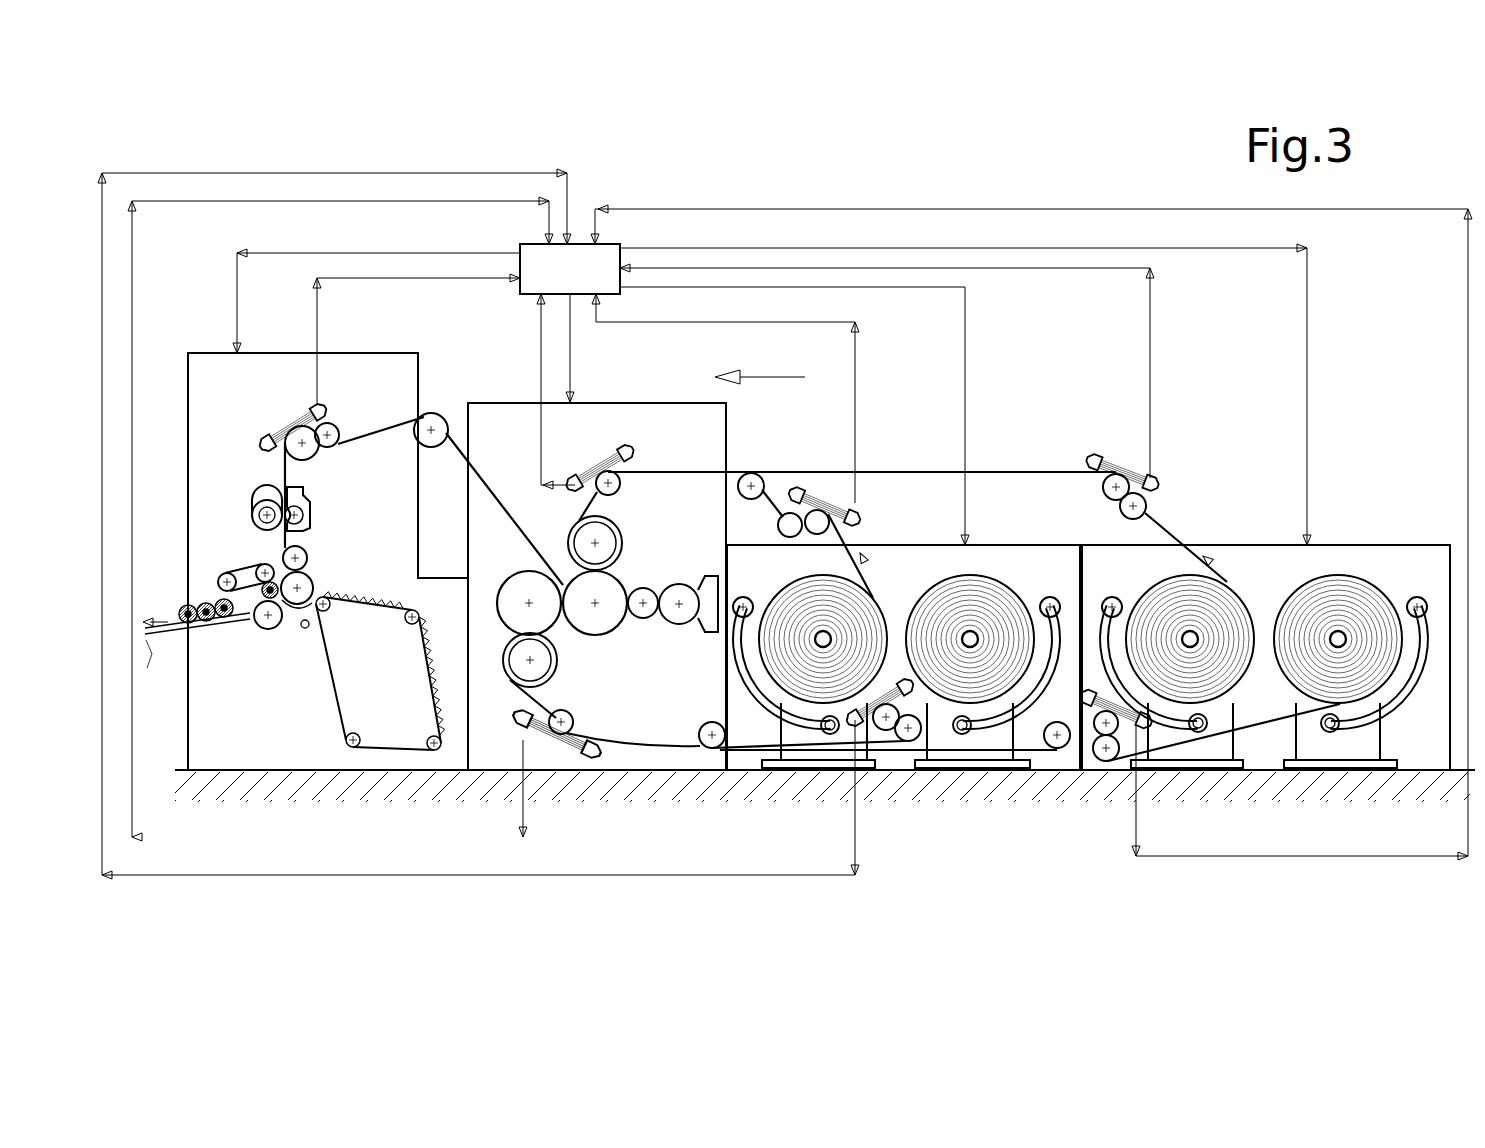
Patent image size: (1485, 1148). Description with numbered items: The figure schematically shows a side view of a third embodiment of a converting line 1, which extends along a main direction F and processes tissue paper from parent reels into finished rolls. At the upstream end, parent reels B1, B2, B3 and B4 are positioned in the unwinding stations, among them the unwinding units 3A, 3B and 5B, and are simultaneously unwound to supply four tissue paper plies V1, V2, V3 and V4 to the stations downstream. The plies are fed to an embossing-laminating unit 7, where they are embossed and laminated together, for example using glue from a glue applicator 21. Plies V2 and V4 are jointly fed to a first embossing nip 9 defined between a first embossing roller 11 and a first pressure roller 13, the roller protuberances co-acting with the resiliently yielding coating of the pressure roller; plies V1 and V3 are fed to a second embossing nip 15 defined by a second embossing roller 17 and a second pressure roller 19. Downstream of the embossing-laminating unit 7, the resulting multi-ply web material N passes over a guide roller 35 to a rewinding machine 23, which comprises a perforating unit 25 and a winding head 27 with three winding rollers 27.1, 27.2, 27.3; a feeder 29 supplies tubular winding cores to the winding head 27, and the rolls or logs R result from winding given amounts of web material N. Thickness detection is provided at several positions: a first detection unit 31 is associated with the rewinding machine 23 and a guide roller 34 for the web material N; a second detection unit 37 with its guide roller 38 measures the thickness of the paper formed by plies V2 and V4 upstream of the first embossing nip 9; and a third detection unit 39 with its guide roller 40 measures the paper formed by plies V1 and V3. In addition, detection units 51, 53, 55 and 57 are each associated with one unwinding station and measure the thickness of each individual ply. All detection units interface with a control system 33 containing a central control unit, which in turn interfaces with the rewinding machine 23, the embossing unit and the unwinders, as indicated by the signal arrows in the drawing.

The converting line 1 is at (1213, 390).
The unwinding unit 3A is at (1349, 745).
The unwinding unit 3B is at (1214, 745).
The unwinding unit 5B is at (792, 728).
The embossing-laminating unit 7 is at (668, 396).
The first embossing nip 9 is at (566, 565).
The first embossing roller 11 is at (611, 590).
The first pressure roller 13 is at (623, 537).
The second embossing nip 15 is at (507, 631).
The second embossing roller 17 is at (520, 591).
The second pressure roller 19 is at (546, 668).
The glue applicator 21 is at (661, 630).
The rewinding machine 23 is at (193, 348).
The perforating unit 25 is at (318, 506).
The winding head 27 is at (319, 547).
The winding roller 27.1 is at (317, 584).
The winding roller 27.2 is at (278, 629).
The winding roller 27.3 is at (260, 565).
The feeder 29 is at (349, 700).
The first detection unit 31 is at (291, 425).
The control system 33 is at (583, 256).
The guide roller 34 is at (319, 455).
The guide roller 35 is at (438, 448).
The second detection unit 37 is at (571, 480).
The guide roller 38 is at (618, 495).
The third detection unit 39 is at (588, 752).
The guide roller 40 is at (570, 718).
The detection unit 51 is at (1096, 463).
The detection unit 53 is at (1086, 713).
The detection unit 55 is at (910, 693).
The detection unit 57 is at (801, 491).
The parent reel B1 is at (1360, 598).
The parent reel B2 is at (1169, 598).
The parent reel B3 is at (1000, 592).
The parent reel B4 is at (809, 590).
The web material N is at (385, 442).
The rolls or logs R is at (222, 600).
The main direction F is at (760, 362).
The tissue paper ply V1 is at (1291, 712).
The tissue paper ply V2 is at (1049, 470).
The tissue paper ply V3 is at (880, 740).
The tissue paper ply V4 is at (858, 542).